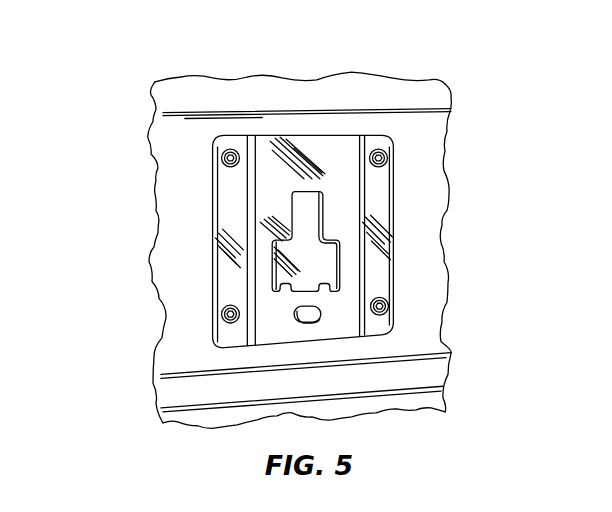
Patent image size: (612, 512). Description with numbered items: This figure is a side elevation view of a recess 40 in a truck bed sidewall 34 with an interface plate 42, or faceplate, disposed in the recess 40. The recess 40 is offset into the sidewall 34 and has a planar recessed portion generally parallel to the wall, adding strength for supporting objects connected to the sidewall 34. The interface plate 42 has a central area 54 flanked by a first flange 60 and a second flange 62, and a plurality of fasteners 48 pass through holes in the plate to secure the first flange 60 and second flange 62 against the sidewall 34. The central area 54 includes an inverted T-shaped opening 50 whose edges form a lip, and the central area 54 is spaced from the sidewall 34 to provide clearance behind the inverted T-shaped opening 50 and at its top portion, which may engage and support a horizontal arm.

The sidewall 34 is at (183, 395).
The recess 40 is at (188, 214).
The interface plate 42 is at (224, 284).
The fastener 48 is at (216, 150).
The inverted T-shaped opening 50 is at (318, 193).
The central area 54 is at (267, 163).
The first flange 60 is at (230, 190).
The second flange 62 is at (393, 190).